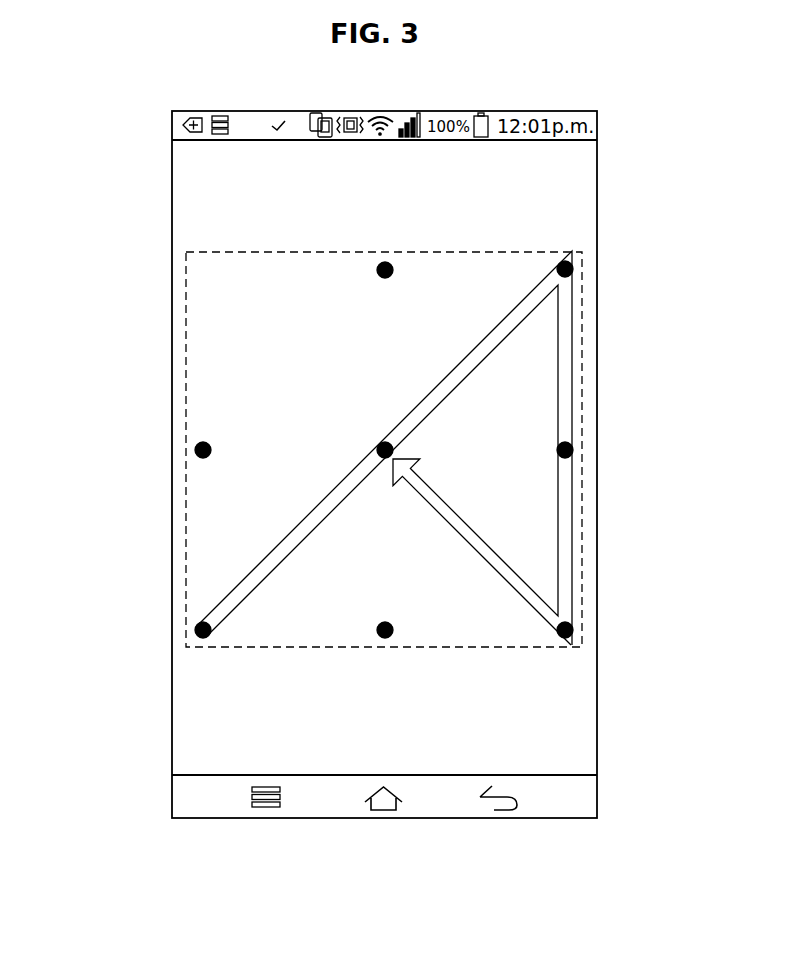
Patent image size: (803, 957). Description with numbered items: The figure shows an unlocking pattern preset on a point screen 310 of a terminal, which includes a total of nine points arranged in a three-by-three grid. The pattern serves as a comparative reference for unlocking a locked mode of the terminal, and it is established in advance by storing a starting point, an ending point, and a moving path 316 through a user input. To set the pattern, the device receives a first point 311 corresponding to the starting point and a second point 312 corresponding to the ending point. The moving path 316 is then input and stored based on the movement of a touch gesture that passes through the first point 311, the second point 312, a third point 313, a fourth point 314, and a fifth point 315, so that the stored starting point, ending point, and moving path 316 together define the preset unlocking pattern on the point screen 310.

The point screen 310 is at (186, 252).
The first point 311 is at (197, 628).
The second point 312 is at (380, 443).
The third point 313 is at (572, 270).
The fourth point 314 is at (572, 450).
The fifth point 315 is at (572, 630).
The moving path 316 is at (452, 528).